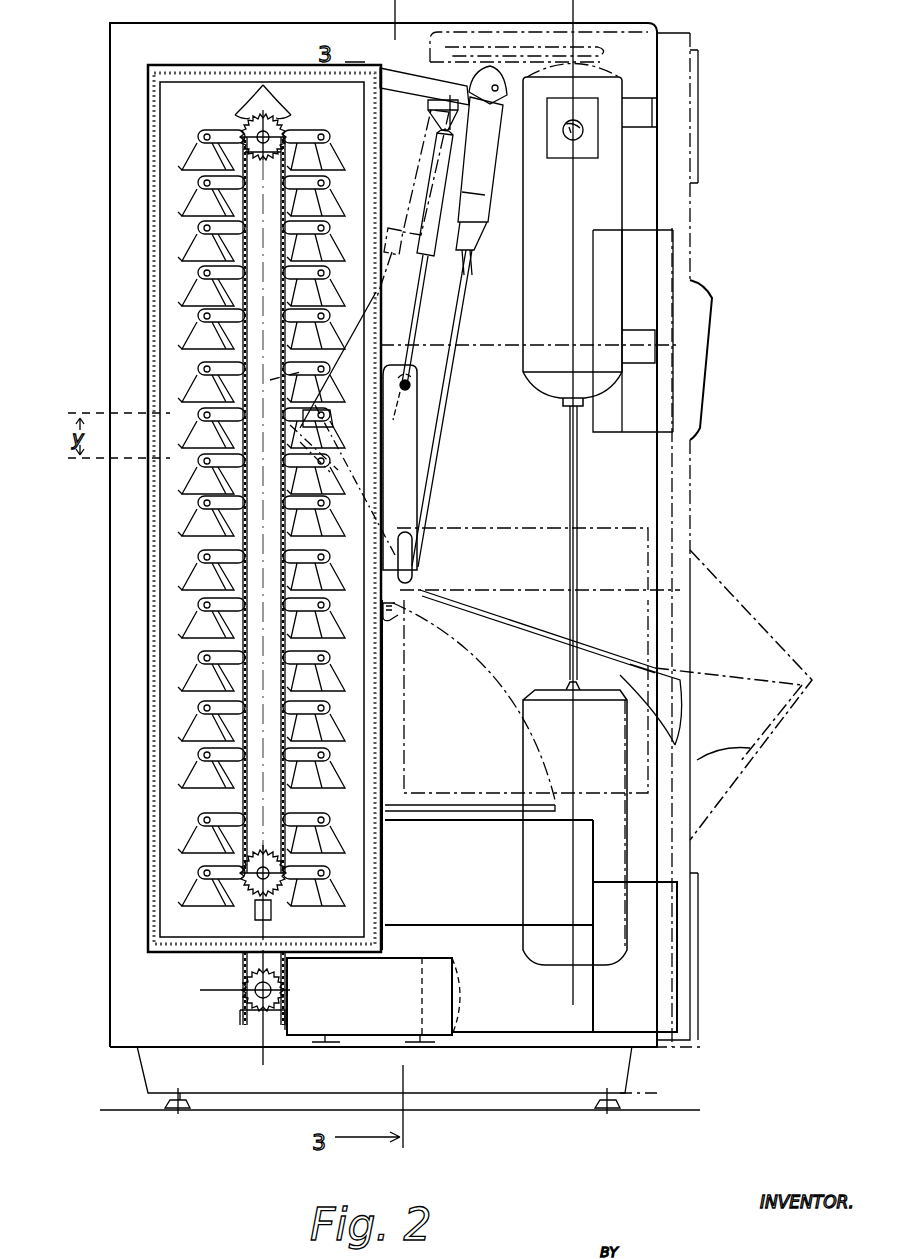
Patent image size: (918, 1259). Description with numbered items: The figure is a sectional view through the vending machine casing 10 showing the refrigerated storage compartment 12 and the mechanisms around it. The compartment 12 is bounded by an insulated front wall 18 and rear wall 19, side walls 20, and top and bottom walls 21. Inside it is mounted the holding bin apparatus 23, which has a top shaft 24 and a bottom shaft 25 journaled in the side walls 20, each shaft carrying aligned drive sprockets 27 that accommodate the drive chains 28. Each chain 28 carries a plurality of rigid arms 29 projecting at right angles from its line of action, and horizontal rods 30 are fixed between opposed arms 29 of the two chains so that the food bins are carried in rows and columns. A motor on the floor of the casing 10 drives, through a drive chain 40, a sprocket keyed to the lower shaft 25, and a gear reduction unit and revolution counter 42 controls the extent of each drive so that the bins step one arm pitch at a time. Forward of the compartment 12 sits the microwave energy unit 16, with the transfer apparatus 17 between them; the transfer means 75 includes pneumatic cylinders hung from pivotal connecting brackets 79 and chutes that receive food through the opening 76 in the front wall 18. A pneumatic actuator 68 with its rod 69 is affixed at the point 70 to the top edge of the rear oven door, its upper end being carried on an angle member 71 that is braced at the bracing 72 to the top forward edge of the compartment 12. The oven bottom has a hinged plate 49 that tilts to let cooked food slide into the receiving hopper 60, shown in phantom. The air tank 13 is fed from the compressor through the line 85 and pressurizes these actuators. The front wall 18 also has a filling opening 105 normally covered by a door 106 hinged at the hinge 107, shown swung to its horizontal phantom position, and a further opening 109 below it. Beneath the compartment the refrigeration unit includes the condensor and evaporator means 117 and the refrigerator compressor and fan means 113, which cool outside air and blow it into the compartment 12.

The casing 10 is at (100, 215).
The refrigerated storage compartment 12 is at (148, 92).
The air tank 13 is at (585, 214).
The microwave energy unit 16 is at (491, 342).
The transfer apparatus 17 is at (435, 290).
The front wall 18 is at (410, 330).
The rear wall 19 is at (148, 207).
The side walls 20 is at (190, 196).
The top and bottom walls 21 is at (228, 66).
The holding bin apparatus 23 is at (170, 336).
The top shaft 24 is at (243, 125).
The bottom shaft 25 is at (240, 905).
The drive sprockets 27 is at (290, 125).
The drive chains 28 is at (270, 620).
The rigid arms 29 is at (245, 572).
The rods 30 is at (200, 275).
The drive chain 40 is at (243, 965).
The gear reduction unit and revolution counter 42 is at (250, 1022).
The plate 49 is at (530, 648).
The receiving hopper 60 is at (757, 762).
The pneumatic actuator 68 is at (488, 160).
The rod 69 is at (470, 288).
The door attachment point 70 is at (476, 88).
The angle member 71 is at (433, 117).
The bracing 72 is at (365, 62).
The transfer means 75 is at (410, 156).
The opening 76 is at (345, 385).
The pivotal connecting bracket 79 is at (432, 125).
The line 85 is at (566, 478).
The opening 105 is at (385, 647).
The door 106 is at (395, 700).
The hinge 107 is at (388, 820).
The opening 109 is at (378, 905).
The refrigerator compressor and fan means 113 is at (515, 890).
The condensor and evaporator means 117 is at (287, 993).